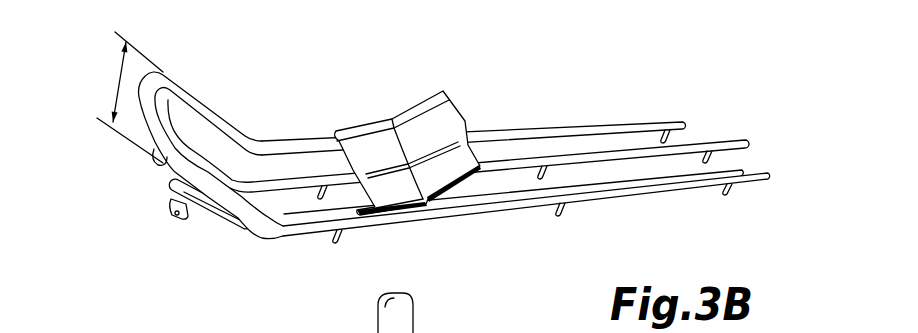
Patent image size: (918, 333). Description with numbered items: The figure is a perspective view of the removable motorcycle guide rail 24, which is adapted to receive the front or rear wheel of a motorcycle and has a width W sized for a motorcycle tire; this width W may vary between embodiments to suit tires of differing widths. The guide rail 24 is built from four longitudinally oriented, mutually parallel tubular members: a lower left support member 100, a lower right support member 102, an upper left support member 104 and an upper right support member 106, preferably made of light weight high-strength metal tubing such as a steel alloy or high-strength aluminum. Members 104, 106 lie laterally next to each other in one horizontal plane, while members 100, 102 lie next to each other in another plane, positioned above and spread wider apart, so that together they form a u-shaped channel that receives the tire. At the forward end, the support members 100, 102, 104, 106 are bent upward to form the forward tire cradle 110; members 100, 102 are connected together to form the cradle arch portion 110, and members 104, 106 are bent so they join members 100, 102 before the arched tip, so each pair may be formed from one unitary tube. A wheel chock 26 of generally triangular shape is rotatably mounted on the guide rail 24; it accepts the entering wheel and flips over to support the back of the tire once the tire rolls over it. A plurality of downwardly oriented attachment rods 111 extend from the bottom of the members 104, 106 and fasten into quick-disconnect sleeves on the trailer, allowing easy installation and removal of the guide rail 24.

The removable motorcycle guide rail 24 is at (704, 47).
The wheel chock 26 is at (403, 100).
The lower left support member 100 is at (760, 182).
The lower right support member 102 is at (713, 137).
The upper left support member 104 is at (643, 192).
The upper right support member 106 is at (610, 120).
The forward tire cradle 110 is at (215, 97).
The attachment rods 111 is at (558, 210).
The width W is at (117, 82).